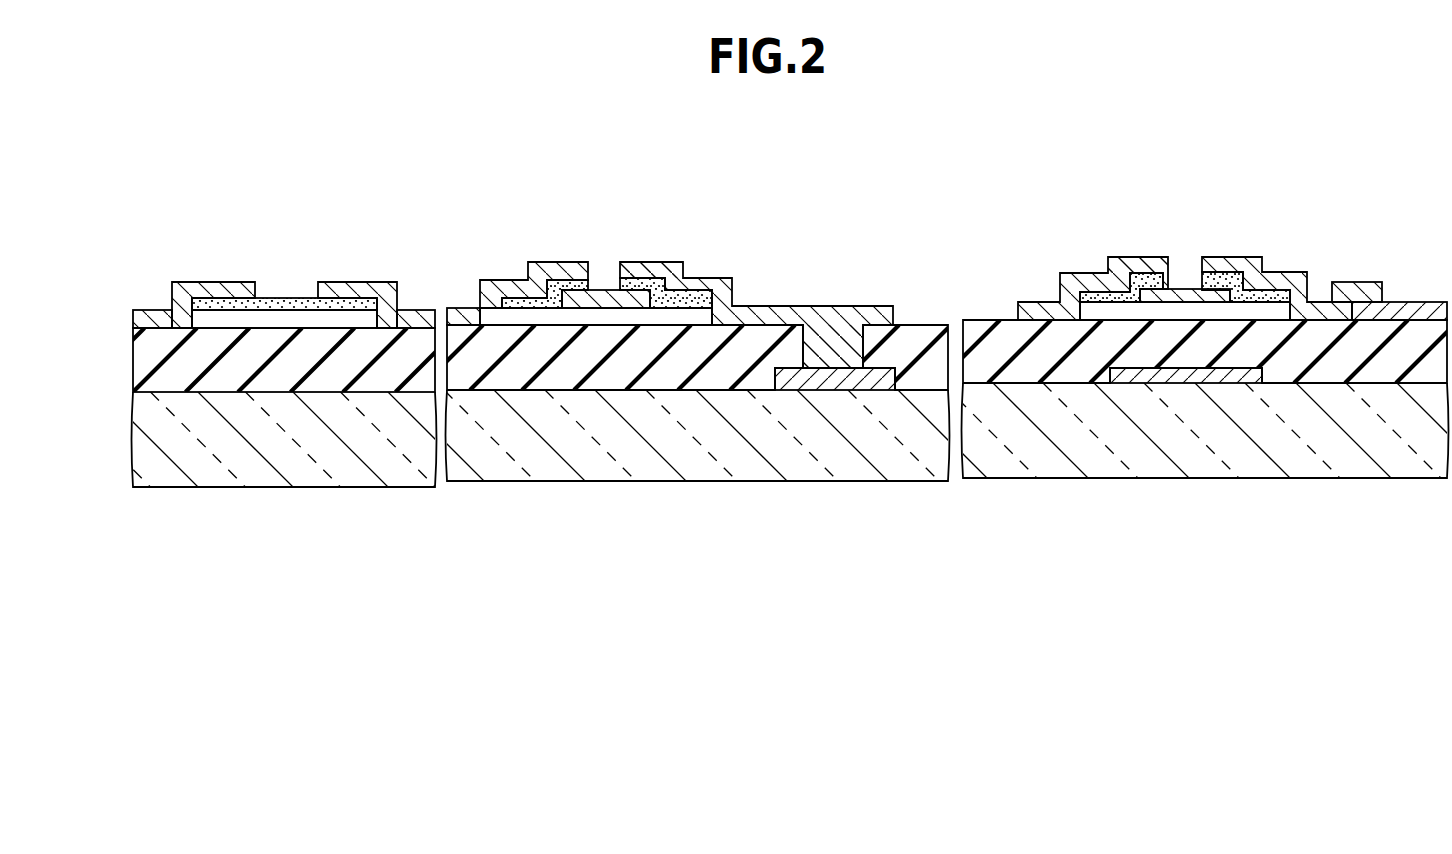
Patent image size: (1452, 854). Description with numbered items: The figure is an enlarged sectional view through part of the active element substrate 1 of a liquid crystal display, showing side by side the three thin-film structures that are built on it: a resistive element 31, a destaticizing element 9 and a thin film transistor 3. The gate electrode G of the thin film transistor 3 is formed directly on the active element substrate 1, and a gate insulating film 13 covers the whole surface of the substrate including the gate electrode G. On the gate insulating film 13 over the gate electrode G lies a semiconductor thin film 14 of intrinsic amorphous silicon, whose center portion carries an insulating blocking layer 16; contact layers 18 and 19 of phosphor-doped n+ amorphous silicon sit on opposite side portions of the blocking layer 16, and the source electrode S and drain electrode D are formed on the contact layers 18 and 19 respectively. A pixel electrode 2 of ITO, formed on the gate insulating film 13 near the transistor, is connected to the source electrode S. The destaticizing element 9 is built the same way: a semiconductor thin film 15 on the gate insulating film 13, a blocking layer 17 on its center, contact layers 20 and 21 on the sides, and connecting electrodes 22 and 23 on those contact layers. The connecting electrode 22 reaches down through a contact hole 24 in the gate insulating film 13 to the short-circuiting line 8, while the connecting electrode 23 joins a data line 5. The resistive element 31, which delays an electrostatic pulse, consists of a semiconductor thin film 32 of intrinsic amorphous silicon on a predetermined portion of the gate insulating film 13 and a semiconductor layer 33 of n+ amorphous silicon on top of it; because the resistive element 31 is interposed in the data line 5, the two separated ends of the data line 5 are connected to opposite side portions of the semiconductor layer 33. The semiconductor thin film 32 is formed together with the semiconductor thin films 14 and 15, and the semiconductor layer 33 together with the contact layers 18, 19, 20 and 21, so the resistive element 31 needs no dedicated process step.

The active element substrate 1 is at (190, 467).
The pixel electrode 2 is at (1417, 307).
The thin film transistor 3 is at (1199, 231).
The data line 5 is at (200, 285).
The short-circuiting line 8 is at (828, 381).
The destaticizing element 9 is at (669, 262).
The gate insulating film 13 is at (273, 382).
The semiconductor thin film 14 is at (1218, 315).
The semiconductor thin film 15 is at (558, 317).
The blocking layer 16 is at (1189, 290).
The blocking layer 17 is at (610, 294).
The contact layer 18 is at (1277, 295).
The contact layer 19 is at (1098, 284).
The contact layer 20 is at (690, 270).
The contact layer 21 is at (520, 292).
The connecting electrode 22 is at (775, 311).
The connecting electrode 23 is at (471, 316).
The contact hole 24 is at (853, 345).
The resistive element 31 is at (284, 360).
The semiconductor thin film 32 is at (330, 320).
The semiconductor layer 33 is at (297, 300).
The drain electrode D is at (1040, 309).
The gate electrode G is at (1145, 374).
The source electrode S is at (1362, 283).